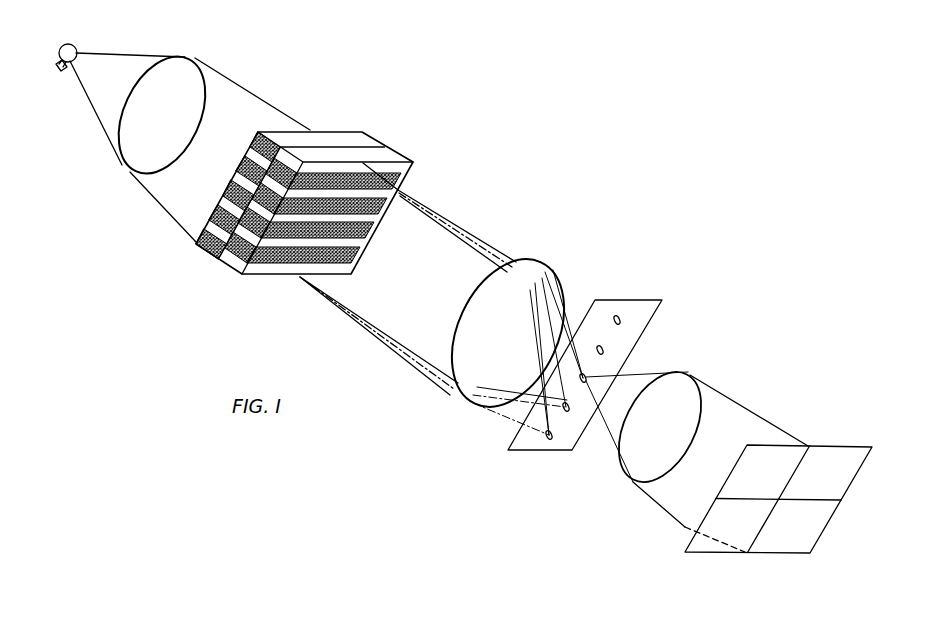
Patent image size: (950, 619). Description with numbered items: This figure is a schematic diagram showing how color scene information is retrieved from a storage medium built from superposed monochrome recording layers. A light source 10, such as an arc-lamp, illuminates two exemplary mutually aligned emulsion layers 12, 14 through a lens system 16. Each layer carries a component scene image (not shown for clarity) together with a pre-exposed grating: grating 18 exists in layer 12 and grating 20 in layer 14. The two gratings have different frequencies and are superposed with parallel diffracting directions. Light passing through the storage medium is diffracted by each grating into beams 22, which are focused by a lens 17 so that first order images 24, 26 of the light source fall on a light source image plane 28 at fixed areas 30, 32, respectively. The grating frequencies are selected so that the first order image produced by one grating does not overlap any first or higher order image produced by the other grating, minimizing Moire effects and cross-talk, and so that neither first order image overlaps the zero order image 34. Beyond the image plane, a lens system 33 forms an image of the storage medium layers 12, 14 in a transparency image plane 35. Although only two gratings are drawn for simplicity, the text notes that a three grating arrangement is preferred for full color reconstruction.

The light source 10 is at (66, 43).
The emulsion layer 12 is at (304, 209).
The emulsion layer 14 is at (398, 157).
The lens system 16 is at (183, 58).
The lens 17 is at (553, 262).
The grating 18 is at (198, 242).
The grating 20 is at (258, 268).
The beams 22 is at (468, 240).
The first order image 24 is at (598, 350).
The first order image 26 is at (615, 320).
The light source image plane 28 is at (622, 300).
The fixed area 30 is at (604, 350).
The fixed area 32 is at (622, 320).
The lens system 33 is at (690, 372).
The zero order image 34 is at (587, 380).
The transparency image plane 35 is at (826, 445).